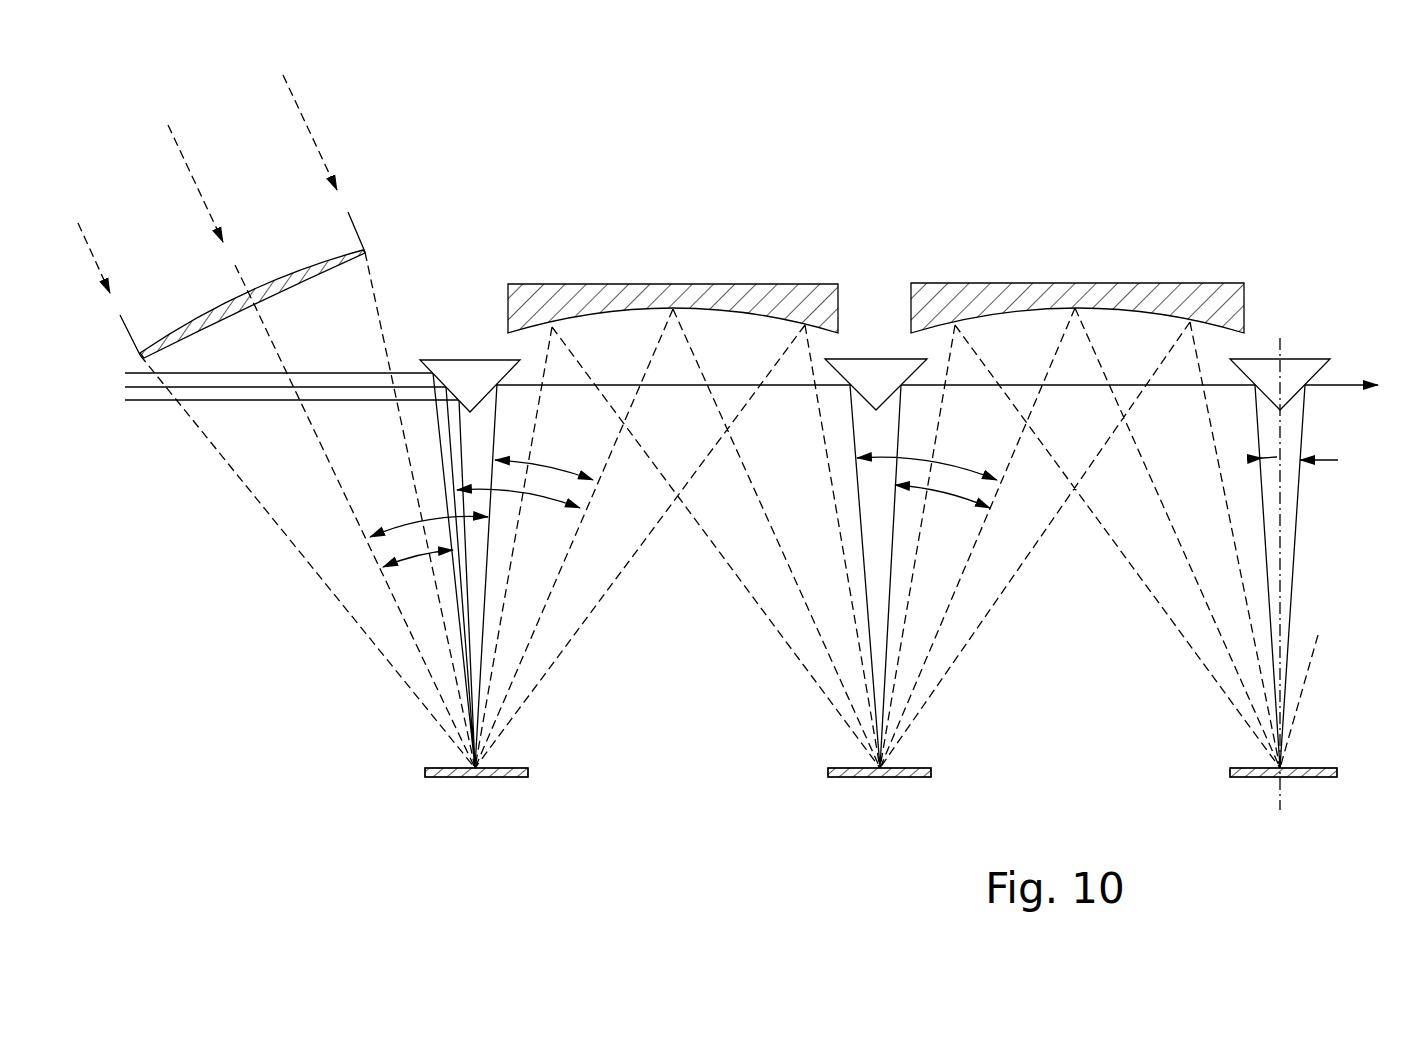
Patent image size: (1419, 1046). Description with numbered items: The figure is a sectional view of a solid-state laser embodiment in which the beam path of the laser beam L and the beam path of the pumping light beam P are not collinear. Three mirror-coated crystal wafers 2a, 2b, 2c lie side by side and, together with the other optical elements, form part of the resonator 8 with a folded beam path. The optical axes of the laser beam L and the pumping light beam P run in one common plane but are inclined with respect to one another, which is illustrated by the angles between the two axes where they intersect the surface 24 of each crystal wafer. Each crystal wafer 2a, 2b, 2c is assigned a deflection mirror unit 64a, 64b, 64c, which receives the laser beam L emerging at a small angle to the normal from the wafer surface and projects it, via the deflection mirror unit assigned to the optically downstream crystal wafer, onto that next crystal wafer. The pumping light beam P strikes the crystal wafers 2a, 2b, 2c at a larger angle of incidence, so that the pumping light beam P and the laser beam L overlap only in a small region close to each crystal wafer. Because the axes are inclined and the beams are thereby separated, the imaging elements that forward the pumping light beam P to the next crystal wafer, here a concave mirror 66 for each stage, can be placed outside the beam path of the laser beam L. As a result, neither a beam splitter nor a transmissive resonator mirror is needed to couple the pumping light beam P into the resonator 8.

The pumping light beam P is at (200, 185).
The concave mirror 66 is at (765, 292).
The deflection mirror unit 64a is at (472, 376).
The deflection mirror unit 64b is at (877, 376).
The deflection mirror unit 64c is at (1306, 373).
The laser beam L is at (677, 388).
The surface 24 is at (510, 768).
The crystal wafer 2a is at (447, 779).
The crystal wafer 2b is at (856, 779).
The crystal wafer 2c is at (1252, 778).
The resonator 8 is at (656, 802).